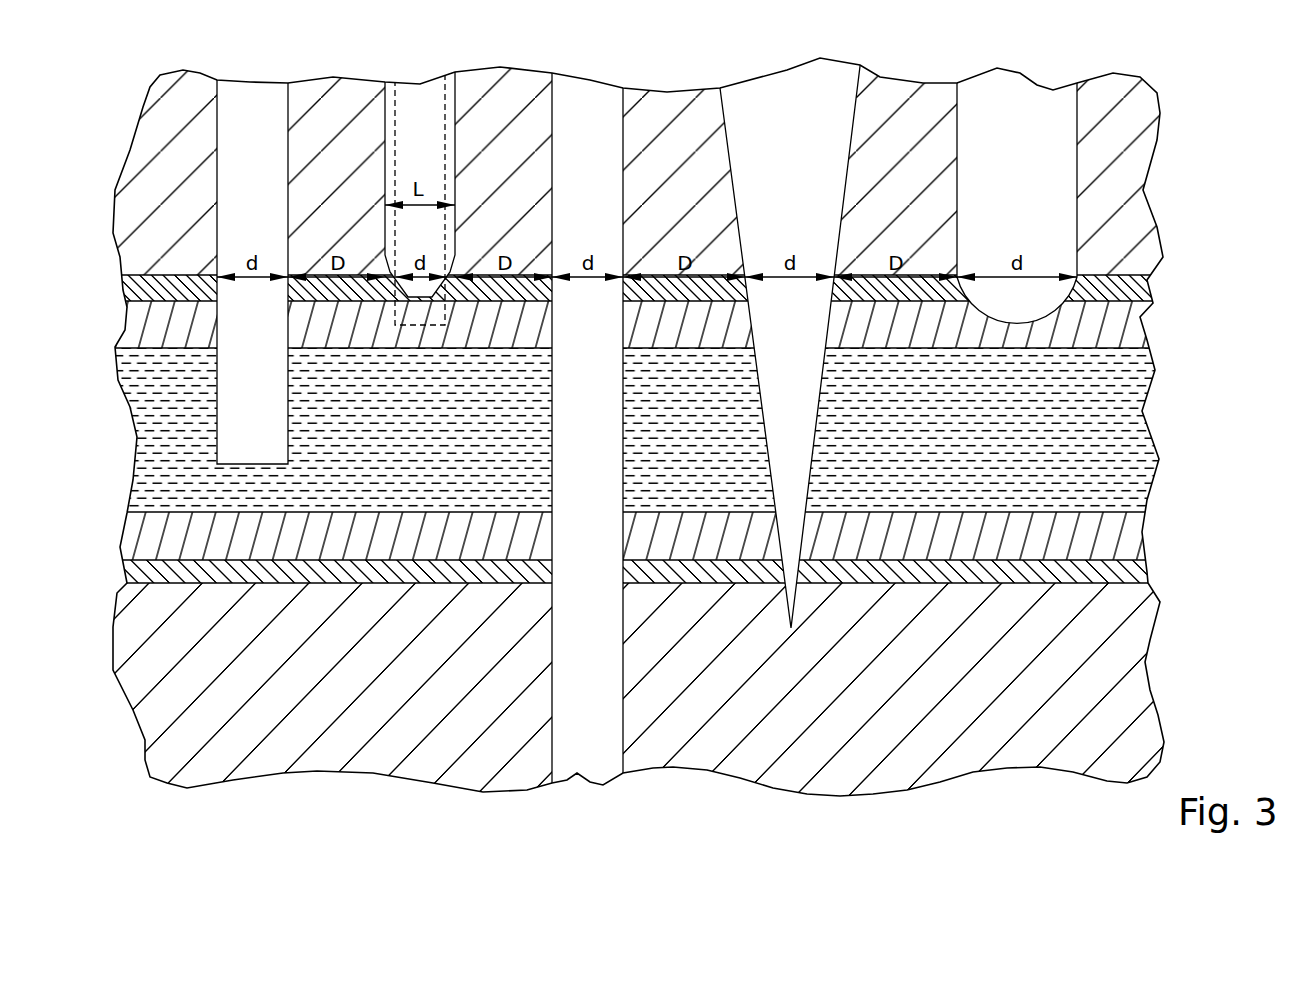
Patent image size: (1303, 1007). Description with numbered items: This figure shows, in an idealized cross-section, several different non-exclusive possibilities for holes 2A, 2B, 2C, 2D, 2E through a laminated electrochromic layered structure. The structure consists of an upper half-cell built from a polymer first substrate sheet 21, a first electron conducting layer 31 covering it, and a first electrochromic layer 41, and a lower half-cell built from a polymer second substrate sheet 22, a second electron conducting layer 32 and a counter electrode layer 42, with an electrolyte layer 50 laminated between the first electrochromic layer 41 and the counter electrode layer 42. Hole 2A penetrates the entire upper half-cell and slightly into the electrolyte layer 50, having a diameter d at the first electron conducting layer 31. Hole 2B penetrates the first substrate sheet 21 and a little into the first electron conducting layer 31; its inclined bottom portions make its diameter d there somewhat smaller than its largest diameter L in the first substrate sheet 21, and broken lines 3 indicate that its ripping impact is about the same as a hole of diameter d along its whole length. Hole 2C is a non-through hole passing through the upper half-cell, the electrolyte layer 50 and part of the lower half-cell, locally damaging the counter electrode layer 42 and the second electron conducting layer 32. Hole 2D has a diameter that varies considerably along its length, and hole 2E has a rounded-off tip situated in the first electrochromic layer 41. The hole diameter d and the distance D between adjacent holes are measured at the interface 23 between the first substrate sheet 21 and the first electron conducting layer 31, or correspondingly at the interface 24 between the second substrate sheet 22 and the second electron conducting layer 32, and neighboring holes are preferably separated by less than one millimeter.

The hole 2A is at (265, 122).
The hole 2B is at (407, 122).
The hole 2C is at (605, 122).
The hole 2D is at (750, 118).
The hole 2E is at (1050, 130).
The broken lines 3 is at (436, 120).
The first substrate sheet 21 is at (1135, 150).
The second substrate sheet 22 is at (1143, 712).
The interface 23 is at (117, 254).
The interface 24 is at (142, 585).
The first electron conducting layer 31 is at (1150, 286).
The second electron conducting layer 32 is at (1145, 578).
The first electrochromic layer 41 is at (1150, 327).
The counter electrode layer 42 is at (1133, 539).
The electrolyte layer 50 is at (1125, 418).